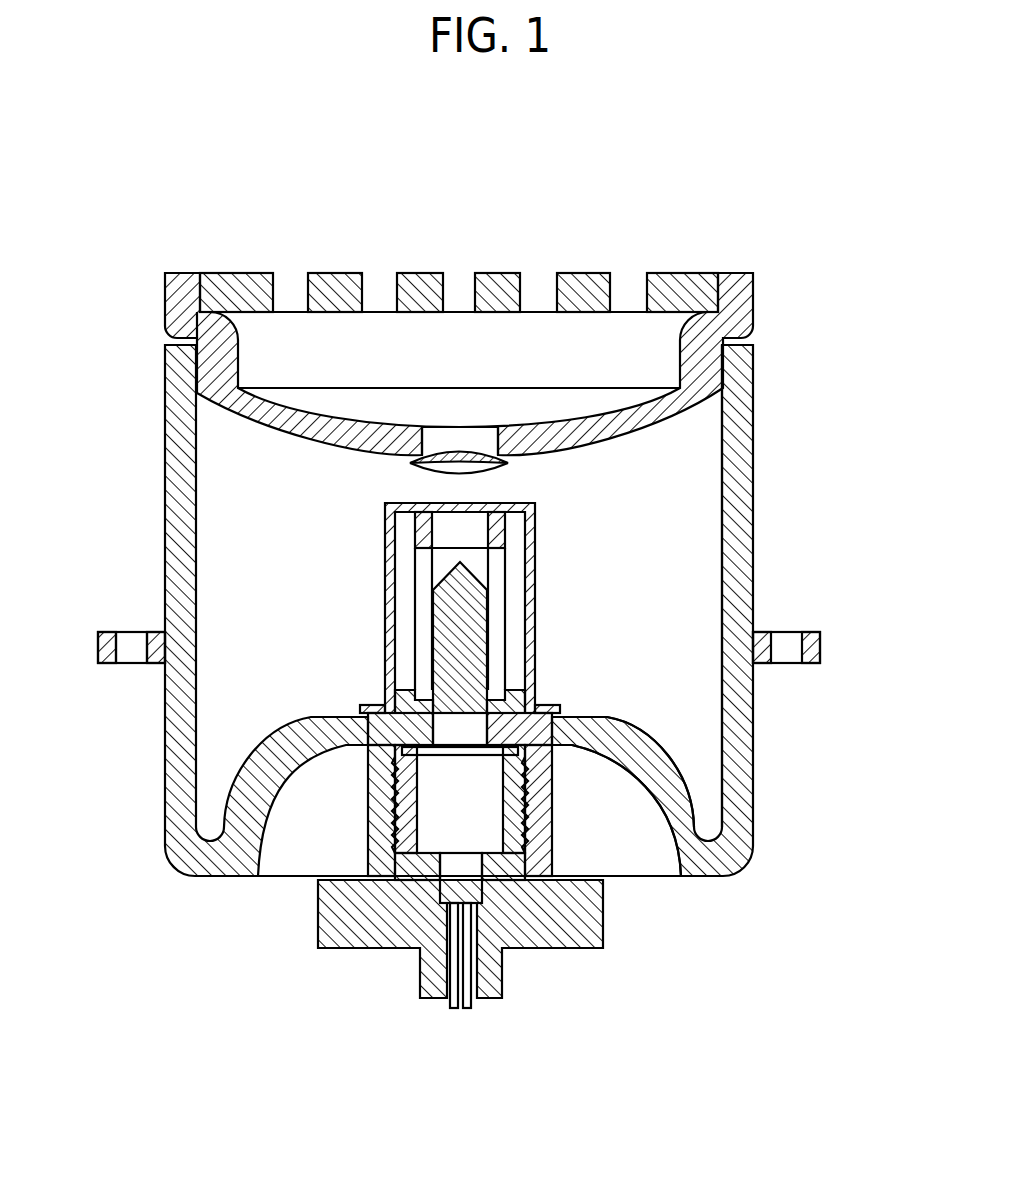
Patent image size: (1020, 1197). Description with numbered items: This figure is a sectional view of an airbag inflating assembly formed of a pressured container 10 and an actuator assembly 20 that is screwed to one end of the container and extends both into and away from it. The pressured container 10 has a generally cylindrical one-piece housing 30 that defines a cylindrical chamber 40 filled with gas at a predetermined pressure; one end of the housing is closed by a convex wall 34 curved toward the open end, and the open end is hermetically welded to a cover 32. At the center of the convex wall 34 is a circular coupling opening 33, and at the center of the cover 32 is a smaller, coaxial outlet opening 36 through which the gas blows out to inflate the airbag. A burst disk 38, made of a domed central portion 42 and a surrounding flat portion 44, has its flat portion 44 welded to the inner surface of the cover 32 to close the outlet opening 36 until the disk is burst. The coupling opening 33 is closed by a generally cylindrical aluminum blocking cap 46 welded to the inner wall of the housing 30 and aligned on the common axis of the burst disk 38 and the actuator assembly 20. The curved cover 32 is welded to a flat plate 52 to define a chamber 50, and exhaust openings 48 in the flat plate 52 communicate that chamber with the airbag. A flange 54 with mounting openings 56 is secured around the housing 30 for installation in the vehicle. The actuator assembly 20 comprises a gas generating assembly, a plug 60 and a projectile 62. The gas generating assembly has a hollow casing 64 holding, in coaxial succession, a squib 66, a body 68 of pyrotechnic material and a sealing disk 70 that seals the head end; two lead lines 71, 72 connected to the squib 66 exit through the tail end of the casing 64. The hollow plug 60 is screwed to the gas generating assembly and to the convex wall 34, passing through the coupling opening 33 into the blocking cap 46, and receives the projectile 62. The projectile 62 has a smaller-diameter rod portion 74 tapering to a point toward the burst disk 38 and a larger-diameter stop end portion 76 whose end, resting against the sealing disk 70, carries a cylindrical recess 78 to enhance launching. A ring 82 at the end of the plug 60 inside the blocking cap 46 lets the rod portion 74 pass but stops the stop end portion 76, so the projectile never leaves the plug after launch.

The pressured container 10 is at (775, 440).
The actuator assembly 20 is at (557, 813).
The housing 30 is at (750, 556).
The cover 32 is at (690, 408).
The coupling opening 33 is at (373, 727).
The convex wall 34 is at (663, 772).
The outlet opening 36 is at (483, 433).
The burst disk 38 is at (432, 432).
The chamber 40 is at (700, 688).
The central portion 42 is at (472, 437).
The flat portion 44 is at (413, 463).
The blocking cap 46 is at (535, 548).
The exhaust openings 48 is at (630, 283).
The chamber 50 is at (647, 340).
The flat plate 52 is at (493, 272).
The flange 54 is at (98, 660).
The mounting openings 56 is at (130, 660).
The plug 60 is at (388, 707).
The projectile 62 is at (470, 615).
The casing 64 is at (602, 925).
The squib 66 is at (440, 898).
The body of pyrotechnic material 68 is at (447, 888).
The sealing disk 70 is at (403, 752).
The lead line 71 is at (452, 1010).
The lead line 72 is at (468, 1010).
The rod portion 74 is at (432, 610).
The stop end portion 76 is at (560, 732).
The cylindrical recess 78 is at (600, 720).
The ring 82 is at (498, 523).